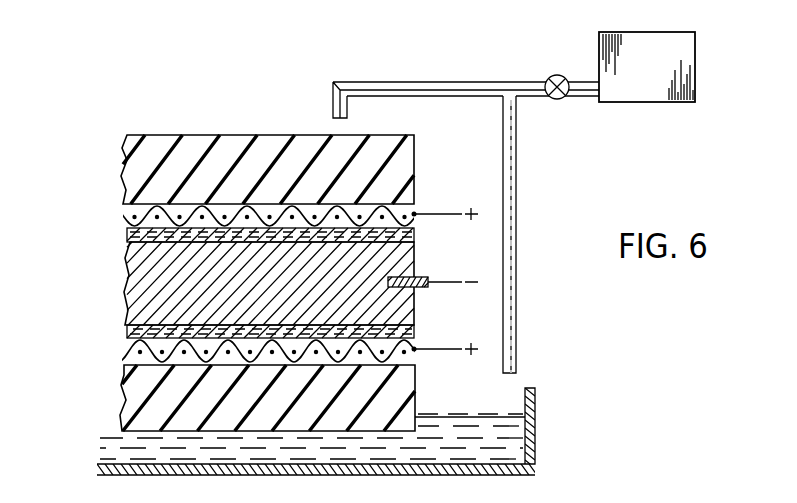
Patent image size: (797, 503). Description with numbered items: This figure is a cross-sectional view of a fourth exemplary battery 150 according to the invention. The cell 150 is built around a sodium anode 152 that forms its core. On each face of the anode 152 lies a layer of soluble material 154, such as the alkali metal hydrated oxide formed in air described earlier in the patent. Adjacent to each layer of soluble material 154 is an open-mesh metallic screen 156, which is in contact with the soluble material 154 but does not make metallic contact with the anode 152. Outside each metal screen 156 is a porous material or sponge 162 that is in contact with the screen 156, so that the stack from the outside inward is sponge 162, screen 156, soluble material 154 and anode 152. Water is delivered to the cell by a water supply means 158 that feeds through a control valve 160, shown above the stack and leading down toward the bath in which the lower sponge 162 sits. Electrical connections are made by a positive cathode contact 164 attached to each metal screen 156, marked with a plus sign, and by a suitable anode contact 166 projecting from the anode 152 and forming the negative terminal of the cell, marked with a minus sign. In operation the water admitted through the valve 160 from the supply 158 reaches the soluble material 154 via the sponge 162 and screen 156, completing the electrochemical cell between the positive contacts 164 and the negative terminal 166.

The battery 150 is at (118, 122).
The sodium anode 152 is at (124, 300).
The layer of soluble material 154 is at (127, 238).
The open-mesh metallic screen 156 is at (126, 222).
The water supply means 158 is at (641, 102).
The control valve 160 is at (559, 100).
The porous material or sponge 162 is at (124, 181).
The positive cathode contact 164 is at (418, 214).
The anode contact 166 is at (426, 279).